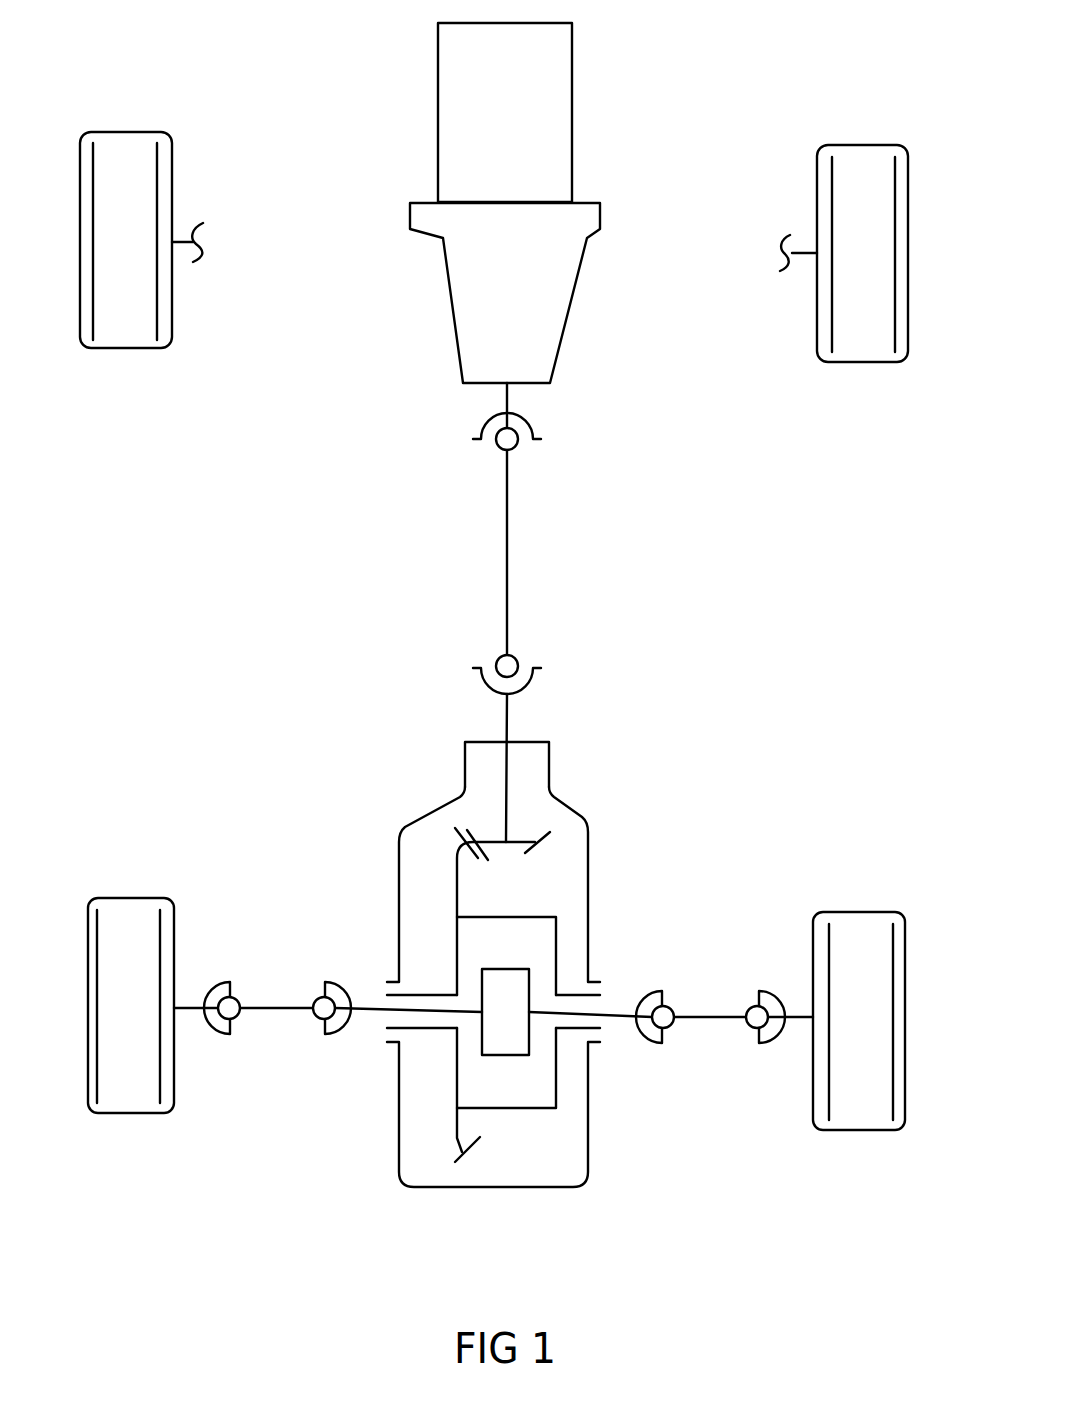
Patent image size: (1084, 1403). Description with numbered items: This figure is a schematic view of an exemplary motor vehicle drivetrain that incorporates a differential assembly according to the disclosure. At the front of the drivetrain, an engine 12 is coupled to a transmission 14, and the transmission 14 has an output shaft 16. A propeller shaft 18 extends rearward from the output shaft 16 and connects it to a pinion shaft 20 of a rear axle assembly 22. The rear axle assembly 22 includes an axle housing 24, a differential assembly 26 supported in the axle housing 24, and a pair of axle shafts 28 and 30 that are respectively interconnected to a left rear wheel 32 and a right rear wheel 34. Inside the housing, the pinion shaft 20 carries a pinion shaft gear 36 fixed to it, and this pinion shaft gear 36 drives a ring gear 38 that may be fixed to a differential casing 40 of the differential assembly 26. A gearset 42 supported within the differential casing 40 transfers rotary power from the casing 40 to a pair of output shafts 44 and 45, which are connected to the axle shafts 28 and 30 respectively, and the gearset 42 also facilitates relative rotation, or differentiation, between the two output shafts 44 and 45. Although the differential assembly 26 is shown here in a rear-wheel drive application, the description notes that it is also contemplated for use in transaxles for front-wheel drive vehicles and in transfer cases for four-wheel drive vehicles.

The engine 12 is at (572, 63).
The transmission 14 is at (556, 342).
The output shaft 16 is at (507, 403).
The propeller shaft 18 is at (507, 555).
The pinion shaft 20 is at (507, 794).
The rear axle assembly 22 is at (393, 773).
The axle housing 24 is at (528, 742).
The differential assembly 26 is at (446, 881).
The axle shaft 28 is at (269, 1034).
The axle shaft 30 is at (714, 1040).
The left rear wheel 32 is at (132, 900).
The right rear wheel 34 is at (862, 912).
The pinion shaft gear 36 is at (533, 850).
The ring gear 38 is at (462, 1152).
The differential casing 40 is at (525, 1108).
The gearset 42 is at (508, 985).
The output shaft 44 is at (370, 1012).
The output shaft 45 is at (612, 1016).